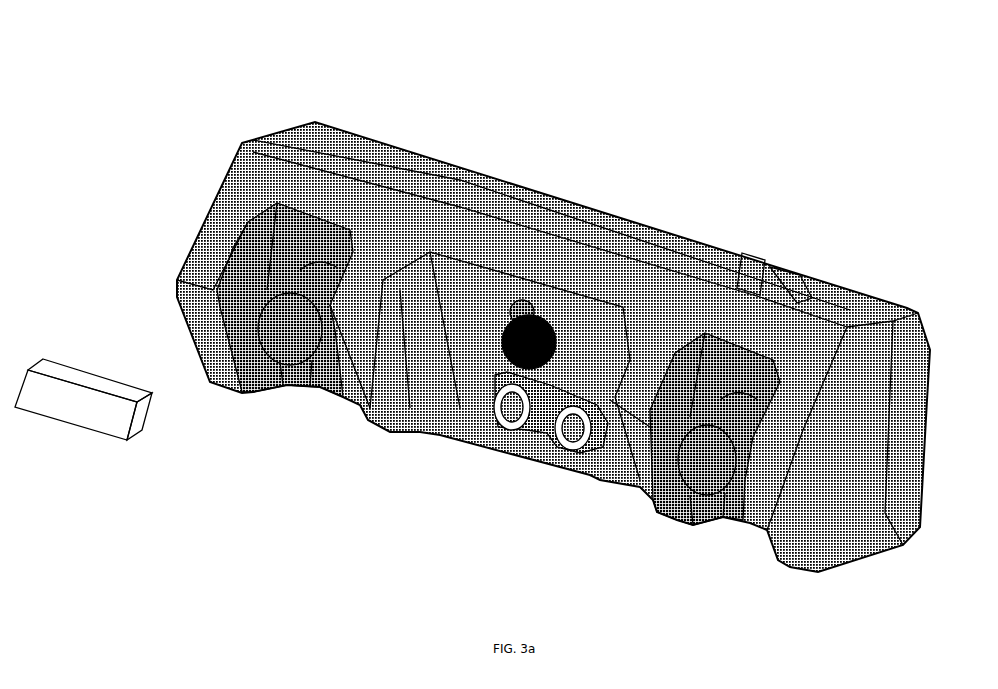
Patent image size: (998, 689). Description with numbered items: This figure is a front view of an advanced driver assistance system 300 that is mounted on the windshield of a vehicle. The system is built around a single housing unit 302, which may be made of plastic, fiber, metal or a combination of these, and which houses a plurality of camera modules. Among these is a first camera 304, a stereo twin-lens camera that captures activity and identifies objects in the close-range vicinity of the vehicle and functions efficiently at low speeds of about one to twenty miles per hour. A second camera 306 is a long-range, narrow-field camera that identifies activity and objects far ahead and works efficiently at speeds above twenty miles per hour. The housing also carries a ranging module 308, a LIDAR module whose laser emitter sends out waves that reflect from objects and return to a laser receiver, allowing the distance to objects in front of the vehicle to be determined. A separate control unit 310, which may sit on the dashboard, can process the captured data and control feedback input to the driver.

The advanced driver assistance system 300 is at (522, 329).
The single housing unit 302 is at (285, 125).
The first camera 304 is at (493, 374).
The second camera 306 is at (512, 312).
The ranging module 308 is at (528, 433).
The control unit 310 is at (75, 367).